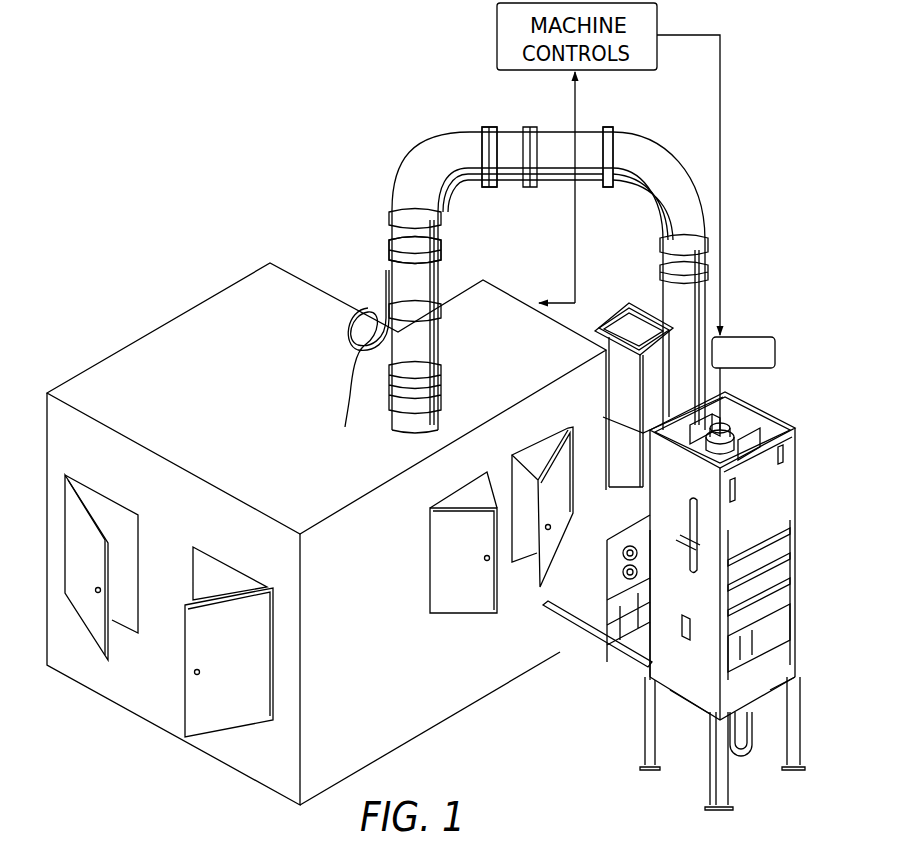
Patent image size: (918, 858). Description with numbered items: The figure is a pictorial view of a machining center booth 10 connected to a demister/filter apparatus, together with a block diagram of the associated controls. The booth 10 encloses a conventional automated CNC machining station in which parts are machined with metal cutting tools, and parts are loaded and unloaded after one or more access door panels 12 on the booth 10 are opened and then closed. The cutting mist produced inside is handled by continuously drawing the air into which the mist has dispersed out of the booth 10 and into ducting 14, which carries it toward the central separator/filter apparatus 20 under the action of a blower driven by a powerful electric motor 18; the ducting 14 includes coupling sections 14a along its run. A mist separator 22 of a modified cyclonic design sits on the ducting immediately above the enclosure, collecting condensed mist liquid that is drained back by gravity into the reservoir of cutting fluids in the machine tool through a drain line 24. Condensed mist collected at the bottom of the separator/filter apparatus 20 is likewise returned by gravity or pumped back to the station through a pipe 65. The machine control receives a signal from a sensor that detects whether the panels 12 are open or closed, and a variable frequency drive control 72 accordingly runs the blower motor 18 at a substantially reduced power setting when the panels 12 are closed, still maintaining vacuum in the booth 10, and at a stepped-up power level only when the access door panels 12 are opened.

The machining center booth 10 is at (255, 312).
The access door panels 12 is at (107, 665).
The ducting 14 is at (432, 160).
The duct flange/coupling 14a is at (490, 127).
The electric motor 18 is at (756, 433).
The central separator/filter apparatus 20 is at (808, 588).
The mist separator 22 is at (386, 256).
The drain line 24 is at (354, 330).
The pipe 65 is at (745, 762).
The variable frequency drive control 72 is at (743, 336).